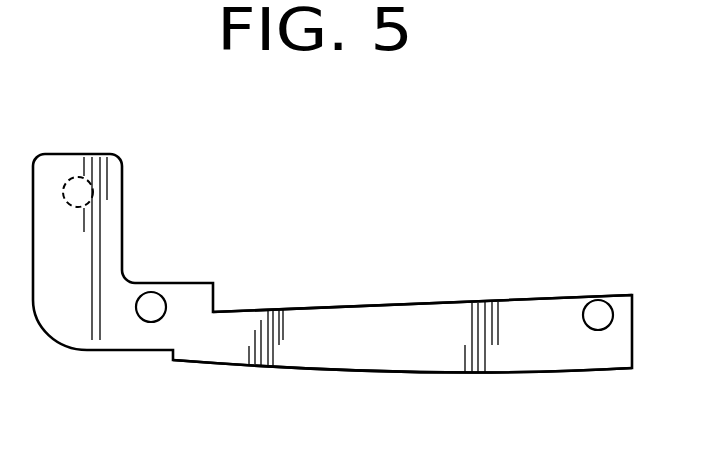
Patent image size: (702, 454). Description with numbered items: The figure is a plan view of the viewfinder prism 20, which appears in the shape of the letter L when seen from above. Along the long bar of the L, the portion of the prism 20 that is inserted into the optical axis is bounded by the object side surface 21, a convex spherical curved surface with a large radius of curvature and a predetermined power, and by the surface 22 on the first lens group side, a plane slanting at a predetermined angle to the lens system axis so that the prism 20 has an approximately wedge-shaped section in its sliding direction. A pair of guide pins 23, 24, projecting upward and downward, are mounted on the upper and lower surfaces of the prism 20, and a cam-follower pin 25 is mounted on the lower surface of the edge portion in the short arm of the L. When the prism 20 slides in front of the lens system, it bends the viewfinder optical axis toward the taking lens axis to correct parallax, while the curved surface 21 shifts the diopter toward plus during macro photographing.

The prism 20 is at (455, 300).
The object side surface 21 is at (385, 373).
The surface of the first lens group side 22 is at (357, 302).
The guide pin 23 is at (153, 305).
The guide pin 24 is at (598, 302).
The cam-follower pin 25 is at (76, 178).